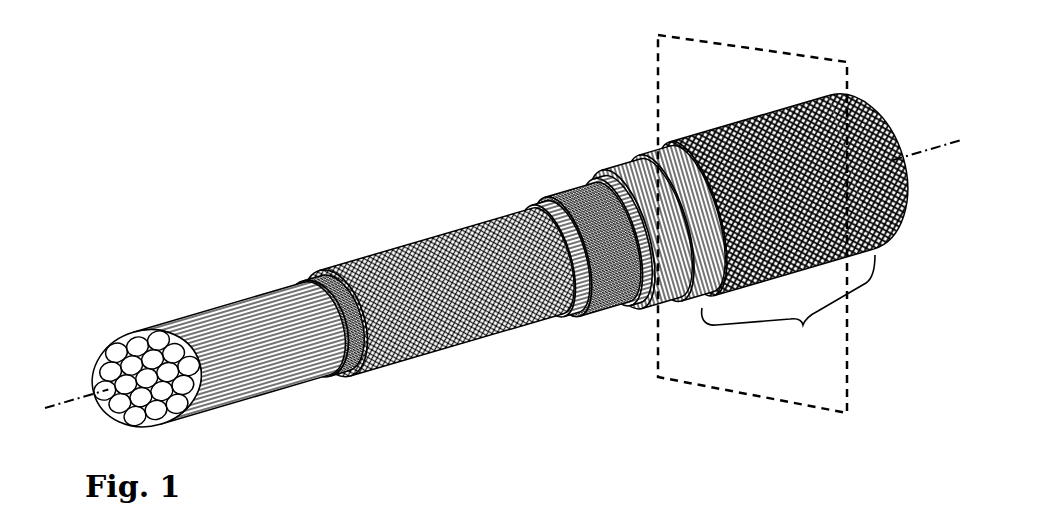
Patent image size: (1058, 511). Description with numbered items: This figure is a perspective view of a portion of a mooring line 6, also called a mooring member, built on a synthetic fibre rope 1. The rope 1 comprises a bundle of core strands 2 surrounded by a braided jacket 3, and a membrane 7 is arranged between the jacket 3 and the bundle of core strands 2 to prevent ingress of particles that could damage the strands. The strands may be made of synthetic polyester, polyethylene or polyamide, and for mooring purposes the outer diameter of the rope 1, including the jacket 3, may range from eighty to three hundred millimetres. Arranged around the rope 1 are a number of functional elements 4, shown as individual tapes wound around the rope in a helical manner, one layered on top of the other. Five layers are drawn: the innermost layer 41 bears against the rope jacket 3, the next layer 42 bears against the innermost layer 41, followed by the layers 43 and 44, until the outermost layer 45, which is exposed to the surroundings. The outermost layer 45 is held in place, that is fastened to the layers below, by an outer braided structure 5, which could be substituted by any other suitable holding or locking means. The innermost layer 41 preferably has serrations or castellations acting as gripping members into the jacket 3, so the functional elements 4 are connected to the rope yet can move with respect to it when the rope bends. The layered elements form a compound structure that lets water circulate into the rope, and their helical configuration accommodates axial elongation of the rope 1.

The synthetic fibre rope 1 is at (328, 240).
The bundle of core strands 2 is at (182, 319).
The braided jacket 3 is at (490, 332).
The functional elements 4 is at (523, 53).
The innermost layer of functional elements 41 is at (545, 215).
The second layer of functional elements 42 is at (545, 197).
The third layer of functional elements 43 is at (612, 208).
The fourth layer of functional elements 44 is at (613, 177).
The outermost layer of functional elements 45 is at (657, 160).
The outer braided structure 5 is at (750, 127).
The mooring line 6 is at (862, 100).
The membrane 7 is at (317, 290).